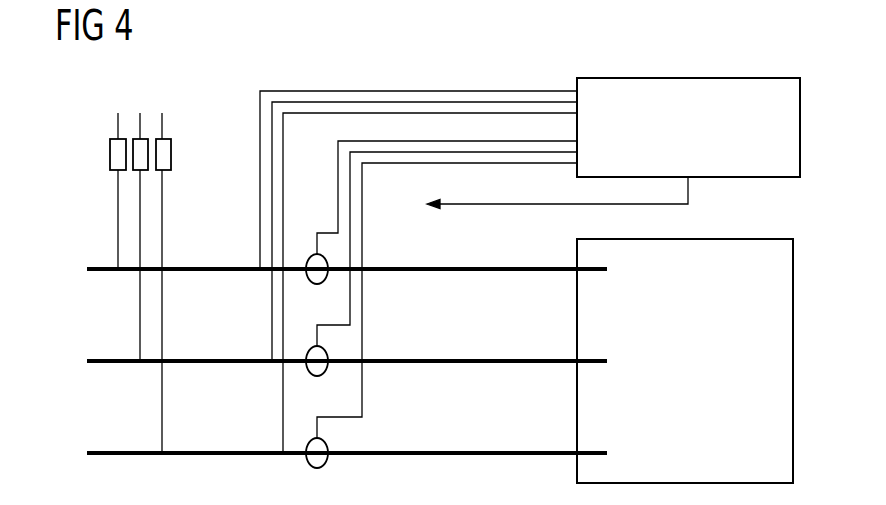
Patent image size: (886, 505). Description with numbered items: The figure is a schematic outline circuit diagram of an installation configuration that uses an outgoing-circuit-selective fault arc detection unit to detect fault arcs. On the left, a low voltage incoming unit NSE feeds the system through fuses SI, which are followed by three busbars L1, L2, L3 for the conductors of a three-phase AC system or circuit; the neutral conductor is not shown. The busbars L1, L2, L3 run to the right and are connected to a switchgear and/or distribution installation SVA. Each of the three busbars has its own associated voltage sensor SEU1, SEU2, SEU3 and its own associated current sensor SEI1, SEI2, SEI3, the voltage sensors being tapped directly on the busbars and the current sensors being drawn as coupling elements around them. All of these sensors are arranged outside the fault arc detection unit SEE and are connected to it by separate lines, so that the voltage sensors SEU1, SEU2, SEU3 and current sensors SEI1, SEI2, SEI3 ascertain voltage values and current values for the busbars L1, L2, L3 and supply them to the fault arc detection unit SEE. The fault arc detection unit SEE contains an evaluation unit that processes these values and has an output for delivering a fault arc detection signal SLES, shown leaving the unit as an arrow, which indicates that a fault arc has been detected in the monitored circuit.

The busbar L1 is at (331, 269).
The busbar L2 is at (331, 361).
The busbar L3 is at (331, 452).
The low voltage incoming unit NSE is at (140, 262).
The fuses SI is at (163, 170).
The fault arc detection unit SEE is at (688, 127).
The switchgear and/or distribution installation SVA is at (685, 361).
The fault arc detection signal SLES is at (557, 208).
The voltage sensor SEU1 is at (256, 266).
The voltage sensor SEU2 is at (267, 356).
The voltage sensor SEU3 is at (281, 448).
The current sensor SEI1 is at (330, 282).
The current sensor SEI2 is at (335, 348).
The current sensor SEI3 is at (332, 435).